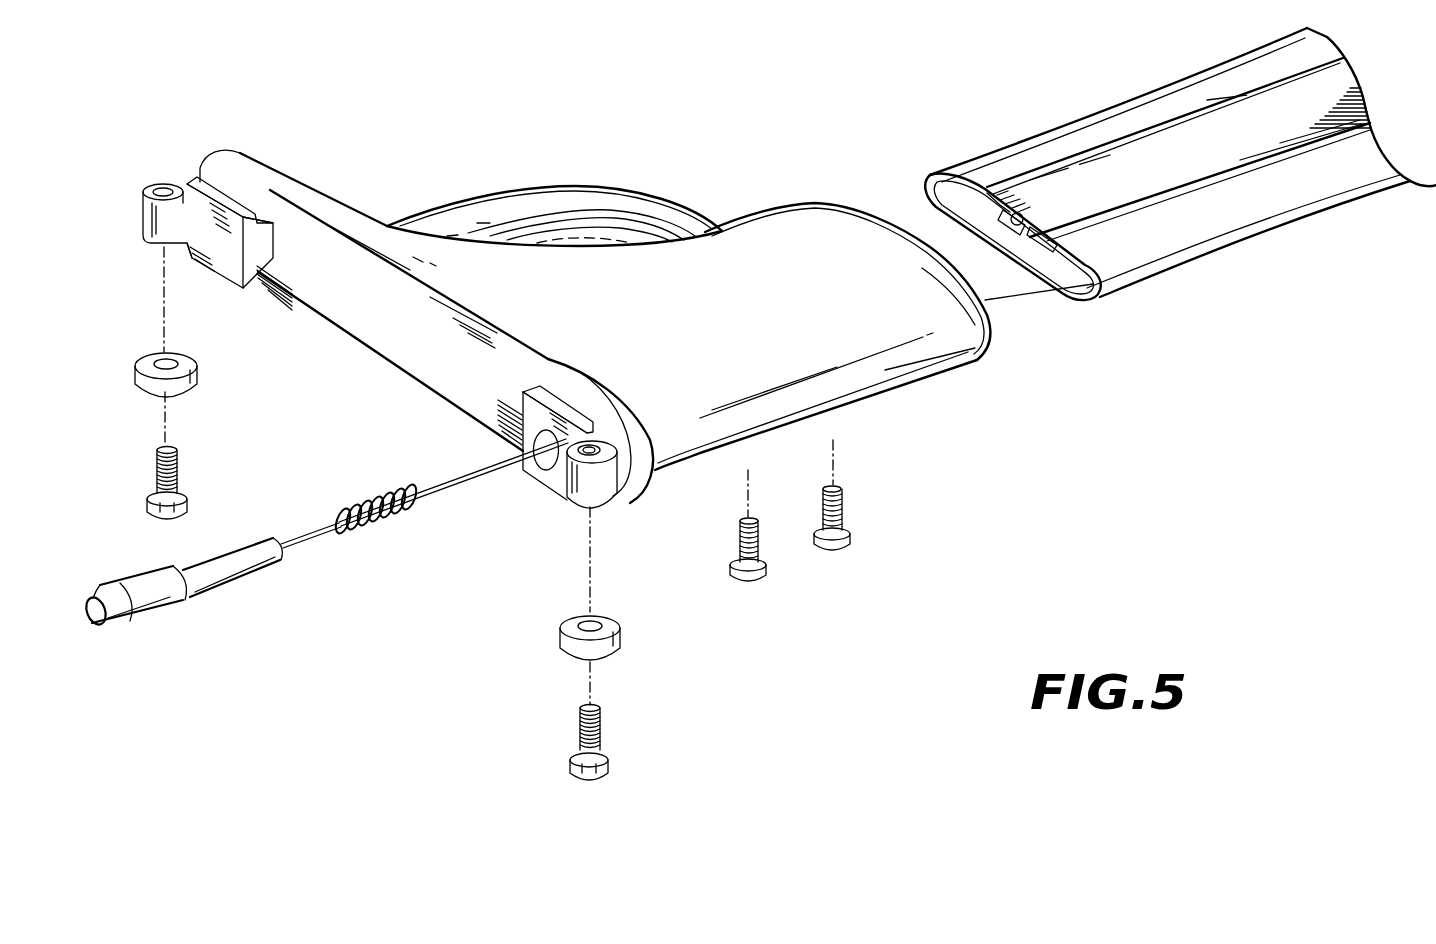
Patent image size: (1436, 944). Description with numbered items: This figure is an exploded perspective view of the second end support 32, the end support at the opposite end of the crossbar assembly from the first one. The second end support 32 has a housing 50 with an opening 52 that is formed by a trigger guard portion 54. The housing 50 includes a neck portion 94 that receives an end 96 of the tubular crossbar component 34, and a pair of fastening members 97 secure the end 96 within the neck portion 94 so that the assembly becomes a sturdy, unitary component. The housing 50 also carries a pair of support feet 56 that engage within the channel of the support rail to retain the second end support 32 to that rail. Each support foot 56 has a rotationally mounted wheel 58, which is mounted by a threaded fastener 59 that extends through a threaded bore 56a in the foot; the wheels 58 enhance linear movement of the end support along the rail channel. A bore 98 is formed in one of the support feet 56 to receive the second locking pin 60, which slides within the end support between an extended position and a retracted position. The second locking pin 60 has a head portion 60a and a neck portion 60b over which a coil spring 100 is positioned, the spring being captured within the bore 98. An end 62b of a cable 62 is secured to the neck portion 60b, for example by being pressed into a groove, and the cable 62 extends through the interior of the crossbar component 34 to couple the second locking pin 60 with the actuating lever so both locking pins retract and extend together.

The second end support 32 is at (413, 192).
The crossbar component 34 is at (1180, 177).
The housing 50 is at (827, 362).
The opening 52 is at (545, 218).
The trigger guard portion 54 is at (640, 218).
The support feet 56 is at (230, 267).
The threaded bore 56a is at (163, 188).
The wheel 58 is at (134, 378).
The threaded fastener 59 is at (157, 470).
The second locking pin 60 is at (188, 592).
The head portion 60a is at (143, 580).
The neck portion 60b is at (237, 572).
The cable 62 is at (437, 497).
The end of cable 62b is at (292, 540).
The neck portion 94 is at (930, 310).
The end of crossbar component 96 is at (1020, 155).
The fastening members 97 is at (742, 576).
The bore 98 is at (550, 464).
The coil spring 100 is at (352, 508).